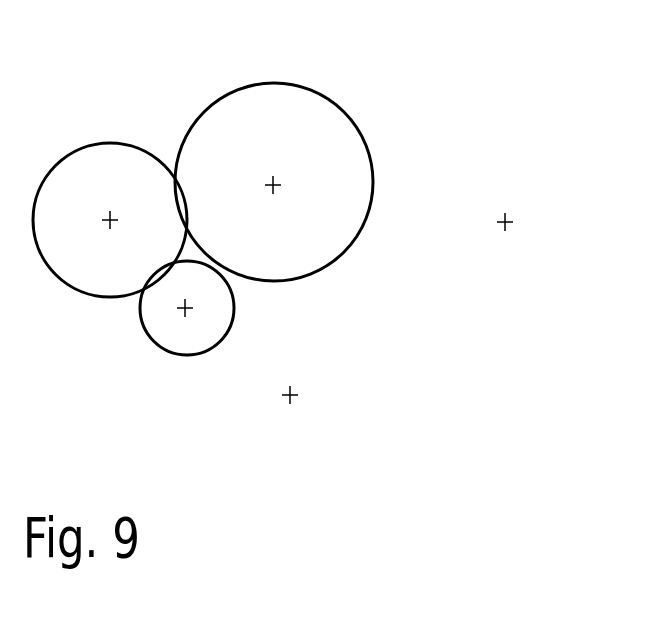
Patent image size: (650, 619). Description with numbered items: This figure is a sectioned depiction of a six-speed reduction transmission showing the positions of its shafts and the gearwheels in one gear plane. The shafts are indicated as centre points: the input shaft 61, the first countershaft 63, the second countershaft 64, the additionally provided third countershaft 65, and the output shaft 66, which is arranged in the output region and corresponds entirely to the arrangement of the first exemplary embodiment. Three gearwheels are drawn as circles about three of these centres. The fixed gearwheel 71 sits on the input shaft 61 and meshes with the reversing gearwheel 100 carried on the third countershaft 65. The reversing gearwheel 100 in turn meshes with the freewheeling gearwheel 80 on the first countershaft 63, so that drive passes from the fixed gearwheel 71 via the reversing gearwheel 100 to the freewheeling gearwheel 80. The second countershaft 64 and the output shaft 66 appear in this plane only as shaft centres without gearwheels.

The reversing gearwheel 100 is at (108, 160).
The freewheeling gearwheel 80 is at (287, 102).
The fixed gearwheel 71 is at (163, 340).
The third countershaft 65 is at (114, 217).
The first countershaft 63 is at (277, 177).
The input shaft 61 is at (188, 305).
The second countershaft 64 is at (296, 390).
The output shaft 66 is at (510, 218).